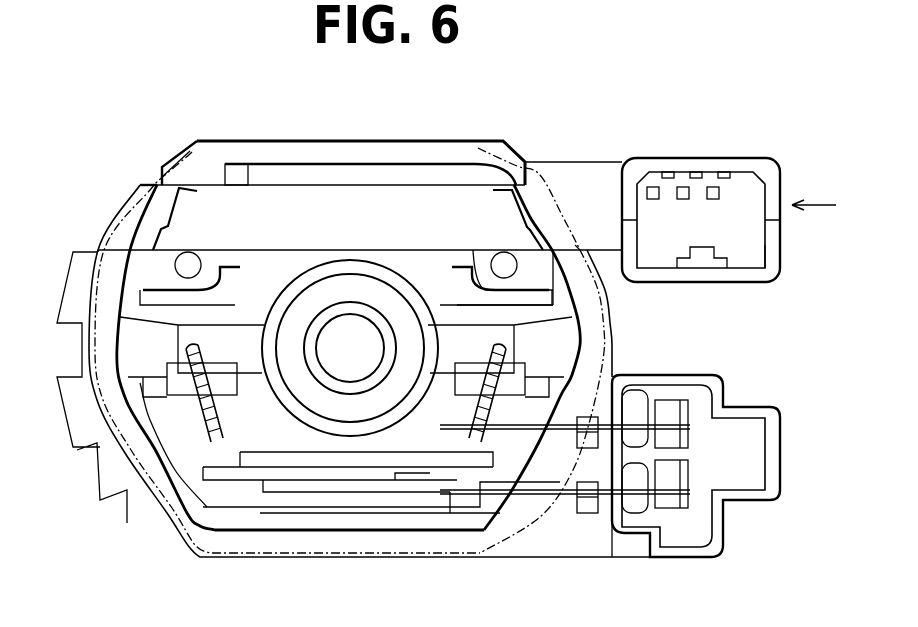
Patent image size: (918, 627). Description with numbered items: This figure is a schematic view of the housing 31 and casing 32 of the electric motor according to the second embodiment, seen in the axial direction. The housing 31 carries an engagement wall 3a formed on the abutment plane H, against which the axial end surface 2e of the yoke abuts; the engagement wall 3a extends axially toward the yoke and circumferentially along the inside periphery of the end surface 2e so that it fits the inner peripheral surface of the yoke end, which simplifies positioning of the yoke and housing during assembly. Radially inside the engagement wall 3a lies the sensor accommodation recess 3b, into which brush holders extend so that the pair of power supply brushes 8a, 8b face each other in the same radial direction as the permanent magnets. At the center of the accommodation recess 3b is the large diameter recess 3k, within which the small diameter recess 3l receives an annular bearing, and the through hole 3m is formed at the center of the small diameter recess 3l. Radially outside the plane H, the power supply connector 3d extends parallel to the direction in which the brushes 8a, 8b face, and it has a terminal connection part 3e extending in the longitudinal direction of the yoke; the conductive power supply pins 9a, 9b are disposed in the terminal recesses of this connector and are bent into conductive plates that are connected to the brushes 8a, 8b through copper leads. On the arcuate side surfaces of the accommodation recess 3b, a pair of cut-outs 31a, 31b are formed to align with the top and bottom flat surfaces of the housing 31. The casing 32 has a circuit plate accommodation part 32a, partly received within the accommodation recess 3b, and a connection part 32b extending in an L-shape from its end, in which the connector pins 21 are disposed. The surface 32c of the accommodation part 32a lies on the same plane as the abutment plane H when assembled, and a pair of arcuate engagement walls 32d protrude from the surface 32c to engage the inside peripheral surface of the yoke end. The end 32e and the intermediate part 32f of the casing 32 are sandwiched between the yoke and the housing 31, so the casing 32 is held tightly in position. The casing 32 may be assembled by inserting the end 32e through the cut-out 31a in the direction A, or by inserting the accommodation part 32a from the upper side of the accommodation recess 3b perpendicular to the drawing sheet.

The axial end surface 2e is at (412, 556).
The housing 31 is at (402, 138).
The circuit plate accommodation part 32a is at (332, 182).
The surface 32c is at (397, 227).
The intermediate part 32f is at (535, 195).
The engagement wall 3a is at (272, 175).
The end 32e is at (143, 200).
The cut-out 31b is at (115, 247).
The engagement walls 32d is at (185, 192).
The cut-out 31a is at (577, 242).
The casing 32 is at (608, 152).
The connector pins 21 is at (653, 199).
The connection part 32b is at (778, 262).
The direction A is at (822, 200).
The sensor accommodation recess 3b is at (459, 284).
The small diameter recess 3l is at (393, 407).
The through hole 3m is at (323, 373).
The large diameter recess 3k is at (275, 285).
The power supply brush 8b is at (180, 338).
The power supply brush 8a is at (500, 338).
The plane H is at (345, 545).
The conductive power supply pin 9a is at (690, 440).
The conductive power supply pin 9b is at (690, 472).
The terminal connection part 3e is at (775, 483).
The power supply connector 3d is at (622, 545).